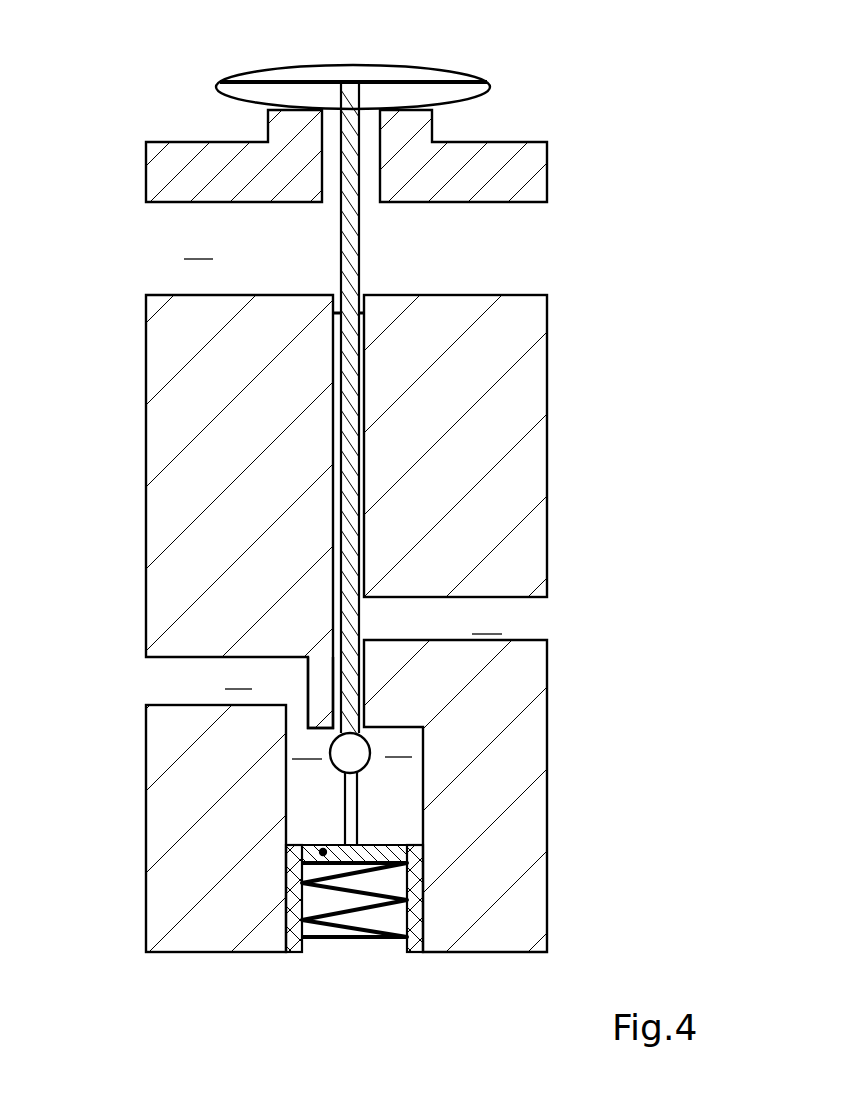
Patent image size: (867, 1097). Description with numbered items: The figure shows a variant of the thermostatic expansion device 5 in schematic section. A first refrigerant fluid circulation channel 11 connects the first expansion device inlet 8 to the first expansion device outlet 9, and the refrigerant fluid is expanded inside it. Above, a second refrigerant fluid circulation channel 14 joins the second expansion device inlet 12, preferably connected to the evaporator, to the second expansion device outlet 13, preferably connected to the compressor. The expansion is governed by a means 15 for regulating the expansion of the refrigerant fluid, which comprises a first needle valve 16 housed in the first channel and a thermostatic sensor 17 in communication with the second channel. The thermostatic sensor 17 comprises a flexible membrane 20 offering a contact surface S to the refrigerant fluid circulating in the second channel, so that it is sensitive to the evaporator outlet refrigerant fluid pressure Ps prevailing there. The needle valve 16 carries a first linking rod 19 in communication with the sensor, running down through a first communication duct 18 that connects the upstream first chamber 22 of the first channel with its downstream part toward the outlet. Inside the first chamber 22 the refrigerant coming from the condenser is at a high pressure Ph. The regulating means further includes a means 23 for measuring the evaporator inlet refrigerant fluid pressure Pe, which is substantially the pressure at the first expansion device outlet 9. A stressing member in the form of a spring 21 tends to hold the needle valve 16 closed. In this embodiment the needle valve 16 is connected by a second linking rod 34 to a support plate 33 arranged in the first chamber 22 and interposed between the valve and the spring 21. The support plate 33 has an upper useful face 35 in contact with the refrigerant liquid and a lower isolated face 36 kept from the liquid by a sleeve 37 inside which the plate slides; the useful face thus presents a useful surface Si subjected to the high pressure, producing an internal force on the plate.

The expansion device 5 is at (599, 496).
The first expansion device inlet 8 is at (132, 690).
The first expansion device outlet 9 is at (552, 625).
The first refrigerant fluid circulation channel 11 is at (238, 678).
The second expansion device inlet 12 is at (538, 253).
The second expansion device outlet 13 is at (140, 247).
The second refrigerant fluid circulation channel 14 is at (433, 548).
The means for regulating the expansion of the refrigerant fluid 15 is at (334, 274).
The first needle valve 16 is at (365, 766).
The thermostatic sensor 17 is at (416, 68).
The first communication duct 18 is at (333, 643).
The first linking rod 19 is at (359, 612).
The membrane 20 is at (252, 72).
The spring 21 is at (407, 886).
The first chamber 22 is at (398, 746).
The means for measuring the evaporator inlet refrigerant fluid pressure 23 is at (366, 268).
The support plate 33 is at (320, 840).
The second linking rod 34 is at (358, 823).
The useful face 35 is at (323, 849).
The isolated face 36 is at (400, 863).
The sleeve 37 is at (423, 930).
The contact surface S is at (306, 82).
The evaporator outlet refrigerant fluid pressure Ps is at (198, 248).
The evaporator inlet refrigerant fluid pressure Pe is at (487, 623).
The high pressure Ph is at (307, 748).
The useful surface Si is at (402, 850).